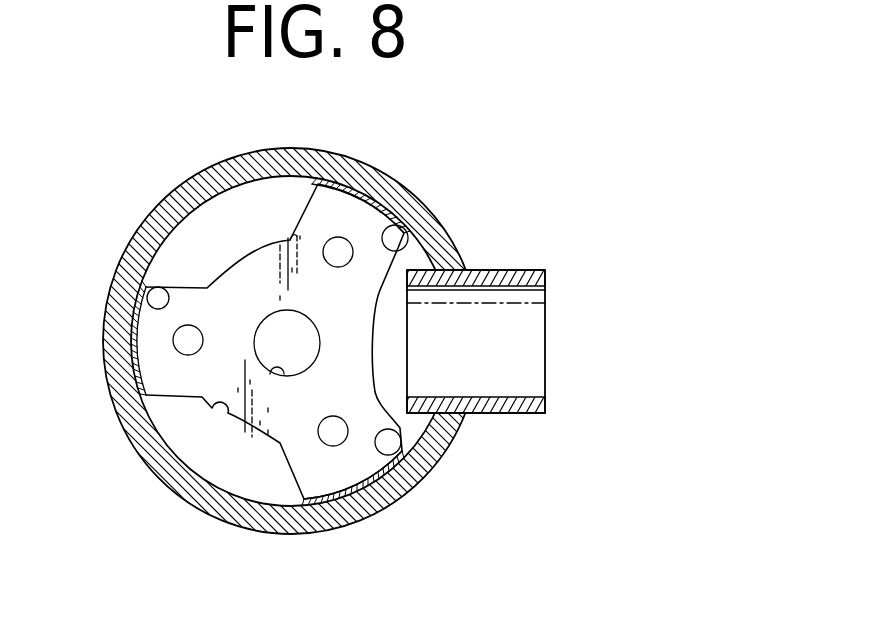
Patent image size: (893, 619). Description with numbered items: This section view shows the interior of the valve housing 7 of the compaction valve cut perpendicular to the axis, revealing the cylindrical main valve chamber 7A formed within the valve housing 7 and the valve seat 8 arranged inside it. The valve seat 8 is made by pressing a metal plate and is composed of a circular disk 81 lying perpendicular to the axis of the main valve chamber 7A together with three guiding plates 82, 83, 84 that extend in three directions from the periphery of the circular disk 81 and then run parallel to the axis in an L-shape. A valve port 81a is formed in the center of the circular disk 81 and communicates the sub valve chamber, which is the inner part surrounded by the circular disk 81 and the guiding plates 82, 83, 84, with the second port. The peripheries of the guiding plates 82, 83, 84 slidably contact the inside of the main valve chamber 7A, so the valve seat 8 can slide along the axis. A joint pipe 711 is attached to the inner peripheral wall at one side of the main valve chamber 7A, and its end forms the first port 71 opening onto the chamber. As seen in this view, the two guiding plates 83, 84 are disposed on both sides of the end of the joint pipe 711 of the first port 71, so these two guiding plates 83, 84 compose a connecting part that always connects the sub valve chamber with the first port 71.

The valve housing 7 is at (104, 369).
The main valve chamber 7A is at (210, 235).
The valve seat 8 is at (180, 411).
The circular disk 81 is at (202, 399).
The valve port 81a is at (277, 372).
The guiding plate 82 is at (125, 266).
The guiding plate 83 is at (440, 250).
The guiding plate 84 is at (443, 422).
The first port 71 is at (418, 341).
The joint pipe 711 is at (533, 313).